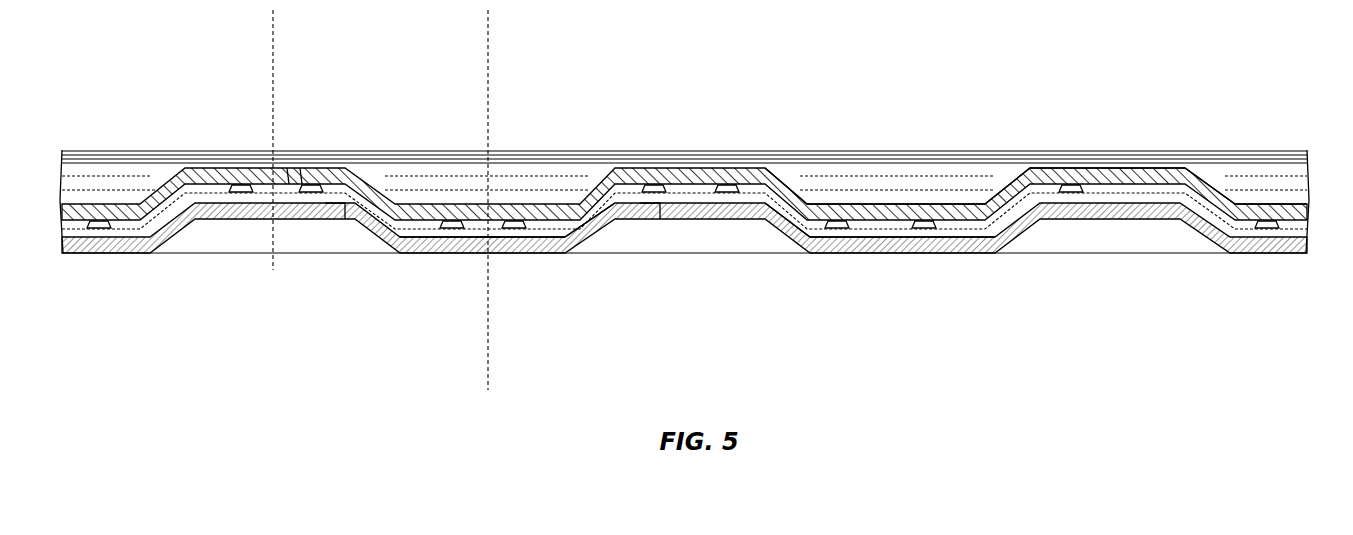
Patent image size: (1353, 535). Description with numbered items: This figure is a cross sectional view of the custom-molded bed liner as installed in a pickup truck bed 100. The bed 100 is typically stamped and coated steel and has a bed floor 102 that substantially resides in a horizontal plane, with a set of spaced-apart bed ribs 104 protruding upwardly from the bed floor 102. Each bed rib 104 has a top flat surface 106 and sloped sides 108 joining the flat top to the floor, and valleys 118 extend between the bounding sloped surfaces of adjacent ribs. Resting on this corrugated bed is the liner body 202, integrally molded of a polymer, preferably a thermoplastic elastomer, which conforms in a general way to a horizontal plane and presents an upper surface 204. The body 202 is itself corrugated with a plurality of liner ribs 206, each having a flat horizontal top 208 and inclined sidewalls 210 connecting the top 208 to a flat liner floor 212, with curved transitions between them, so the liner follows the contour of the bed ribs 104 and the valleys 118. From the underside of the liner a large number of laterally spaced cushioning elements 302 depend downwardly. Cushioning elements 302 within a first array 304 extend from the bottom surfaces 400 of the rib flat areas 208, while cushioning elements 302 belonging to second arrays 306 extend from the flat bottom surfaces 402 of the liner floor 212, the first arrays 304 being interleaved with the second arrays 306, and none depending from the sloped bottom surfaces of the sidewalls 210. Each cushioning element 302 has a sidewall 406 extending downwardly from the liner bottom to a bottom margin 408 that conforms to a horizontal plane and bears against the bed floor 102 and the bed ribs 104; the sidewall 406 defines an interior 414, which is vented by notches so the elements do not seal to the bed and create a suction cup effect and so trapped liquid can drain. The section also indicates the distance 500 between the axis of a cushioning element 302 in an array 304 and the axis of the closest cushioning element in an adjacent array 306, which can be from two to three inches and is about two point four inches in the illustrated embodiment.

The bed 100 is at (1157, 217).
The bed floor 102 is at (528, 240).
The bed rib 104 is at (780, 210).
The top flat surface 106 is at (623, 197).
The sloped side 108 is at (568, 237).
The valley 118 is at (490, 237).
The body 202 is at (1027, 170).
The upper surface 204 is at (817, 208).
The liner rib 206 is at (1190, 173).
The top 208 is at (1118, 168).
The inclined sidewall 210 is at (162, 180).
The liner floor 212 is at (450, 194).
The cushioning element 302 is at (240, 190).
The first array 304 is at (310, 192).
The second array 306 is at (513, 215).
The bottom surface 400 is at (327, 185).
The flat bottom surface 402 is at (836, 232).
The sidewall 406 is at (655, 198).
The bottom margin 408 is at (652, 220).
The interior 414 is at (287, 188).
The distance 500 is at (484, 32).